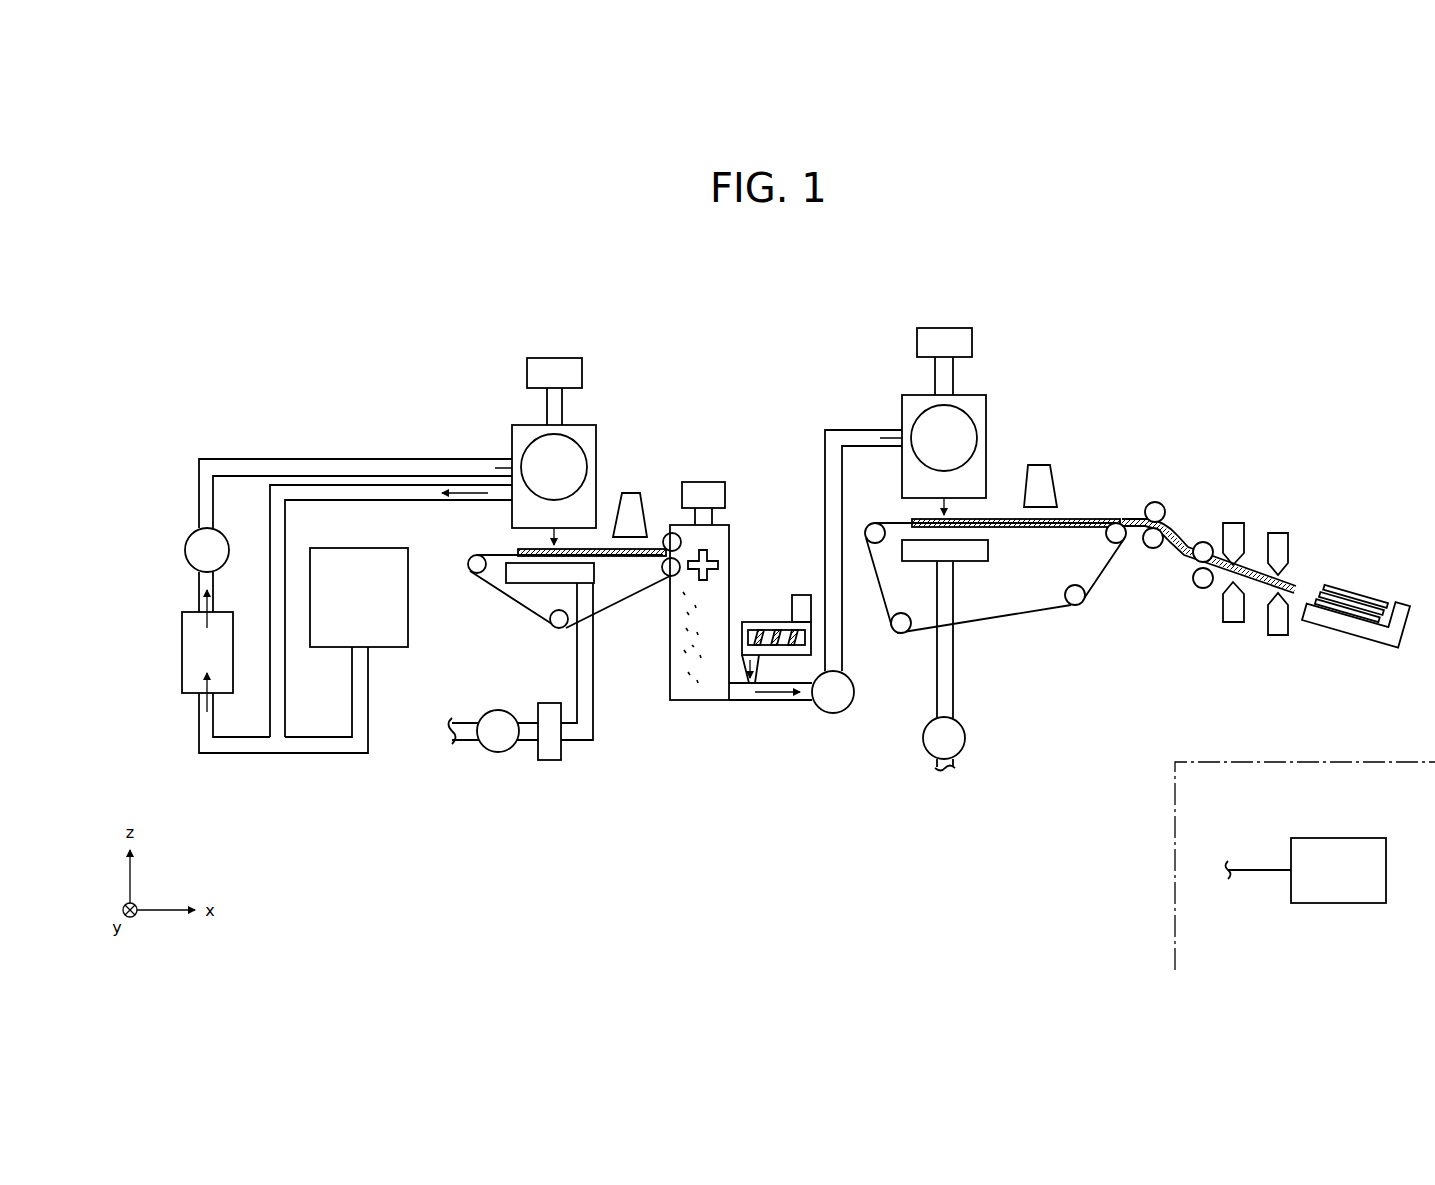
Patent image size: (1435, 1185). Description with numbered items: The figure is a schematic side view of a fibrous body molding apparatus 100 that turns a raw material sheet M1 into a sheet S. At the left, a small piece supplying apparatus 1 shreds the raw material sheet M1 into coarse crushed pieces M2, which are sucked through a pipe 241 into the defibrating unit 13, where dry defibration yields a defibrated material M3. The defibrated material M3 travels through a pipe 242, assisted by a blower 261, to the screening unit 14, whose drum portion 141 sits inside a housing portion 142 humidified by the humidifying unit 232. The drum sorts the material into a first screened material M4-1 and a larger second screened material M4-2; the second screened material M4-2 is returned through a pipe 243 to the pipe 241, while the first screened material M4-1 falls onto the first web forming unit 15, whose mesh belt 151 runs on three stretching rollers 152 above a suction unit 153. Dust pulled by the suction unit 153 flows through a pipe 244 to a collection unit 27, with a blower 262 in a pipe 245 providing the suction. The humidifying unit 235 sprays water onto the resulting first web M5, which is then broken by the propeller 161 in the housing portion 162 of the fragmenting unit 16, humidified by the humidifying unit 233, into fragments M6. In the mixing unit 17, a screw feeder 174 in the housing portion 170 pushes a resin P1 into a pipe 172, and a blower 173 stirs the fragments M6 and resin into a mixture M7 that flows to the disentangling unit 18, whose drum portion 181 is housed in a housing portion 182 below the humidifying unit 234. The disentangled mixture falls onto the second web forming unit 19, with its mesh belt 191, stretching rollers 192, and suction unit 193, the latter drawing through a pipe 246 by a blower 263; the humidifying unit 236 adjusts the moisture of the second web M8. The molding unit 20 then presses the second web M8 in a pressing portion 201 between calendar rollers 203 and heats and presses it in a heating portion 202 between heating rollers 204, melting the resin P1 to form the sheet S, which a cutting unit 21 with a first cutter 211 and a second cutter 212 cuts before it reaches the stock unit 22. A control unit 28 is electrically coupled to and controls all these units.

The fibrous body molding apparatus 100 is at (1127, 305).
The small piece supplying apparatus 1 is at (413, 598).
The defibrating unit 13 is at (182, 660).
The screening unit 14 is at (597, 419).
The drum portion 141 is at (583, 450).
The housing portion 142 is at (590, 425).
The first web forming unit 15 is at (549, 615).
The mesh belt 151 is at (620, 608).
The stretching rollers 152 is at (468, 563).
The suction unit 153 is at (594, 570).
The fragmenting unit 16 is at (714, 641).
The propeller 161 is at (720, 551).
The housing portion 162 is at (680, 702).
The mixing unit 17 is at (820, 605).
The housing portion 170 is at (779, 620).
The pipe 172 is at (843, 660).
The blower 173 is at (840, 710).
The screw feeder 174 is at (752, 630).
The disentangling unit 18 is at (986, 389).
The drum portion 181 is at (975, 420).
The housing portion 182 is at (982, 395).
The second web forming unit 19 is at (997, 587).
The mesh belt 191 is at (993, 622).
The stretching rollers 192 is at (873, 523).
The suction unit 193 is at (990, 548).
The molding unit 20 is at (1240, 548).
The pressing portion 201 is at (1143, 484).
The heating portion 202 is at (1166, 608).
The calendar rollers 203 is at (1193, 462).
The heating rollers 204 is at (1190, 560).
The cutting unit 21 is at (1281, 528).
The first cutter 211 is at (1236, 519).
The second cutter 212 is at (1302, 547).
The stock unit 22 is at (1360, 628).
The humidifying unit 232 is at (553, 358).
The humidifying unit 233 is at (700, 482).
The humidifying unit 234 is at (943, 328).
The humidifying unit 235 is at (638, 493).
The humidifying unit 236 is at (1043, 465).
The pipe 241 is at (320, 753).
The pipe 242 is at (233, 459).
The pipe 243 is at (387, 485).
The pipe 244 is at (593, 705).
The pipe 245 is at (530, 741).
The pipe 246 is at (953, 690).
The blower 261 is at (192, 533).
The blower 262 is at (497, 752).
The blower 263 is at (966, 738).
The collection unit 27 is at (553, 760).
The control unit 28 is at (1340, 903).
The raw material sheet M1 is at (363, 580).
The coarse crushed pieces M2 is at (205, 697).
The defibrated material M3 is at (207, 620).
The first screened material M4-1 is at (554, 524).
The second screened material M4-2 is at (470, 493).
The first web M5 is at (664, 535).
The fragments M6 is at (695, 682).
The mixture M7 is at (775, 700).
The second web M8 is at (1010, 519).
The resin P1 is at (760, 658).
The sheet S is at (1220, 560).